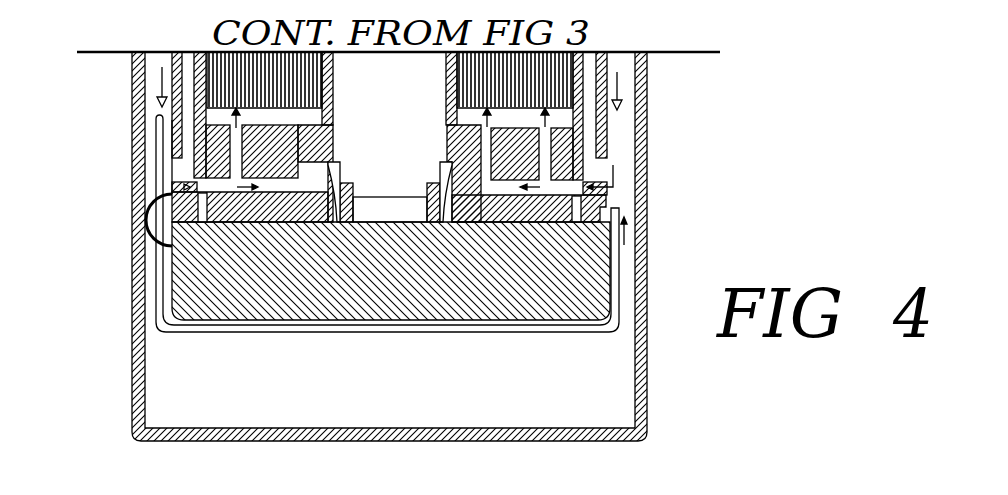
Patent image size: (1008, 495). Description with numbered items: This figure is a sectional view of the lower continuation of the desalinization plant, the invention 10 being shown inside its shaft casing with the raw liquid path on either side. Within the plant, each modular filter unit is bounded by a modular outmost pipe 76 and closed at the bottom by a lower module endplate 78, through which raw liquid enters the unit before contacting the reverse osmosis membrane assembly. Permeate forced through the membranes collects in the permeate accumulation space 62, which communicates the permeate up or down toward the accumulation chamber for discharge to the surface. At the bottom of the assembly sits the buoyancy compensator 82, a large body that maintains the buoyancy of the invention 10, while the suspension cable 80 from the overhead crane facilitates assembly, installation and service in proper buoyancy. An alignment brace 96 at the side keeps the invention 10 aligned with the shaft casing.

The invention 10 is at (790, 405).
The permeate accumulation space 62 is at (340, 116).
The modular outmost pipe 76 is at (607, 120).
The lower module endplate 78 is at (608, 160).
The suspension cable 80 is at (623, 213).
The buoyancy compensator 82 is at (572, 275).
The alignment brace 96 is at (152, 223).